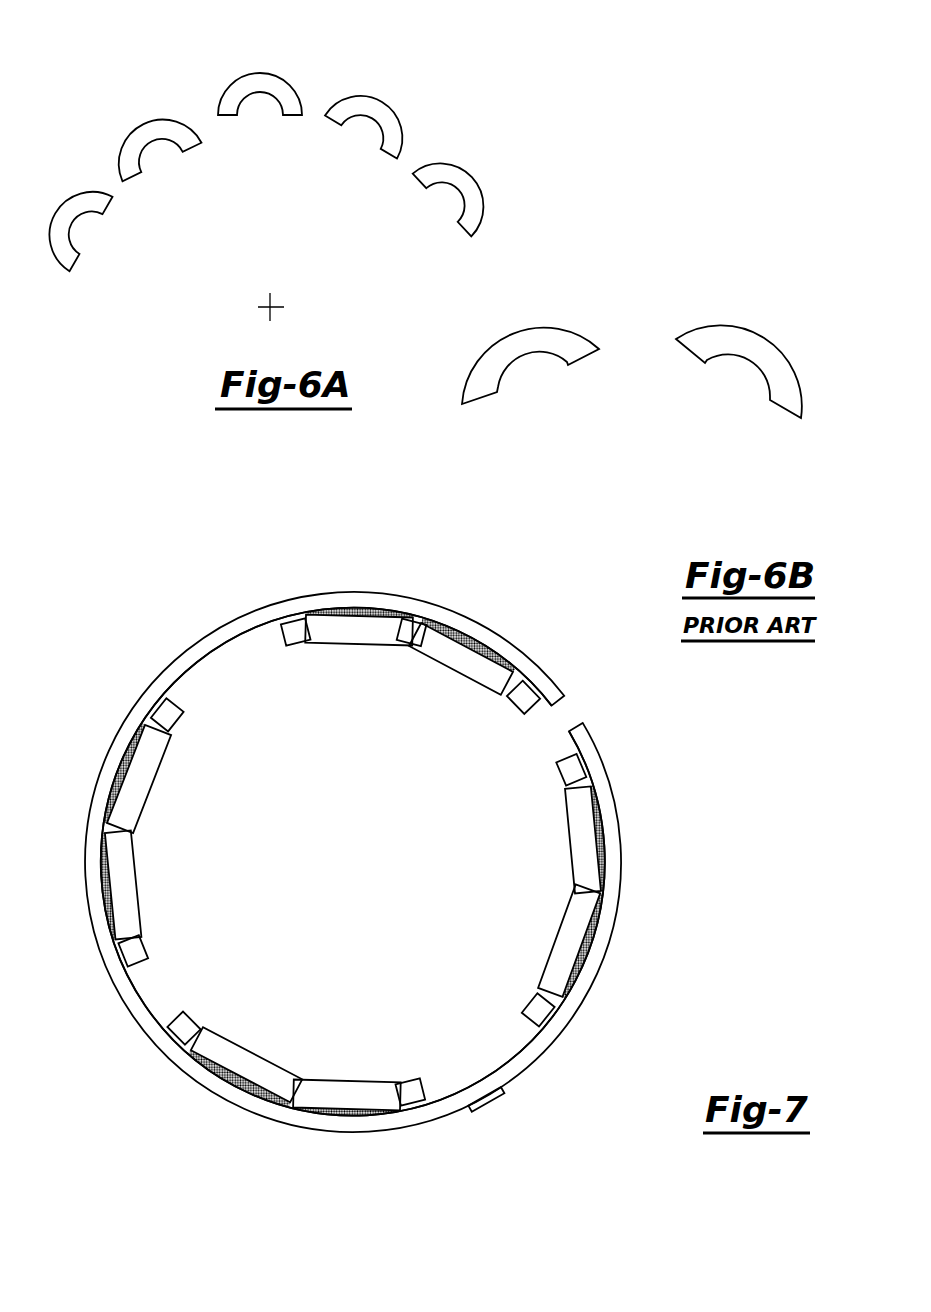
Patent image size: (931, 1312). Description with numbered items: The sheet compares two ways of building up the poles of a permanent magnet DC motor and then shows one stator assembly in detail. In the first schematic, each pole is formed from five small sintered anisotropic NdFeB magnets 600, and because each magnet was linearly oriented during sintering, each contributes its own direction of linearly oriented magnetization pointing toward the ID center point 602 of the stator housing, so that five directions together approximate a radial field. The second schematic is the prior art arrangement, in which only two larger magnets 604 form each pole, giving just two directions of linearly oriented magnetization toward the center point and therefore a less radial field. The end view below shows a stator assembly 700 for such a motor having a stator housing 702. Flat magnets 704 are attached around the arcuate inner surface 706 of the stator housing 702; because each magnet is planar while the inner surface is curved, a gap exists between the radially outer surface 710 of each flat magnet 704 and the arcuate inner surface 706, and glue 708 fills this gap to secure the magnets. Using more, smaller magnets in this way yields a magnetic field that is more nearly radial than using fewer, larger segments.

In FIG. 6A, the small sintered anisotropic NdFeB magnets 600 is at (60, 211).
In FIG. 6A, the ID center point 602 is at (275, 312).
In FIG. 6B, the magnets 604 is at (702, 338).
In FIG. 7, the stator assembly 700 is at (368, 850).
In FIG. 7, the stator housing 702 is at (237, 618).
In FIG. 7, the flat magnets 704 is at (412, 652).
In FIG. 7, the arcuate inner surface 706 is at (212, 656).
In FIG. 7, the glue 708 is at (355, 605).
In FIG. 7, the radially outer surface 710 is at (338, 604).